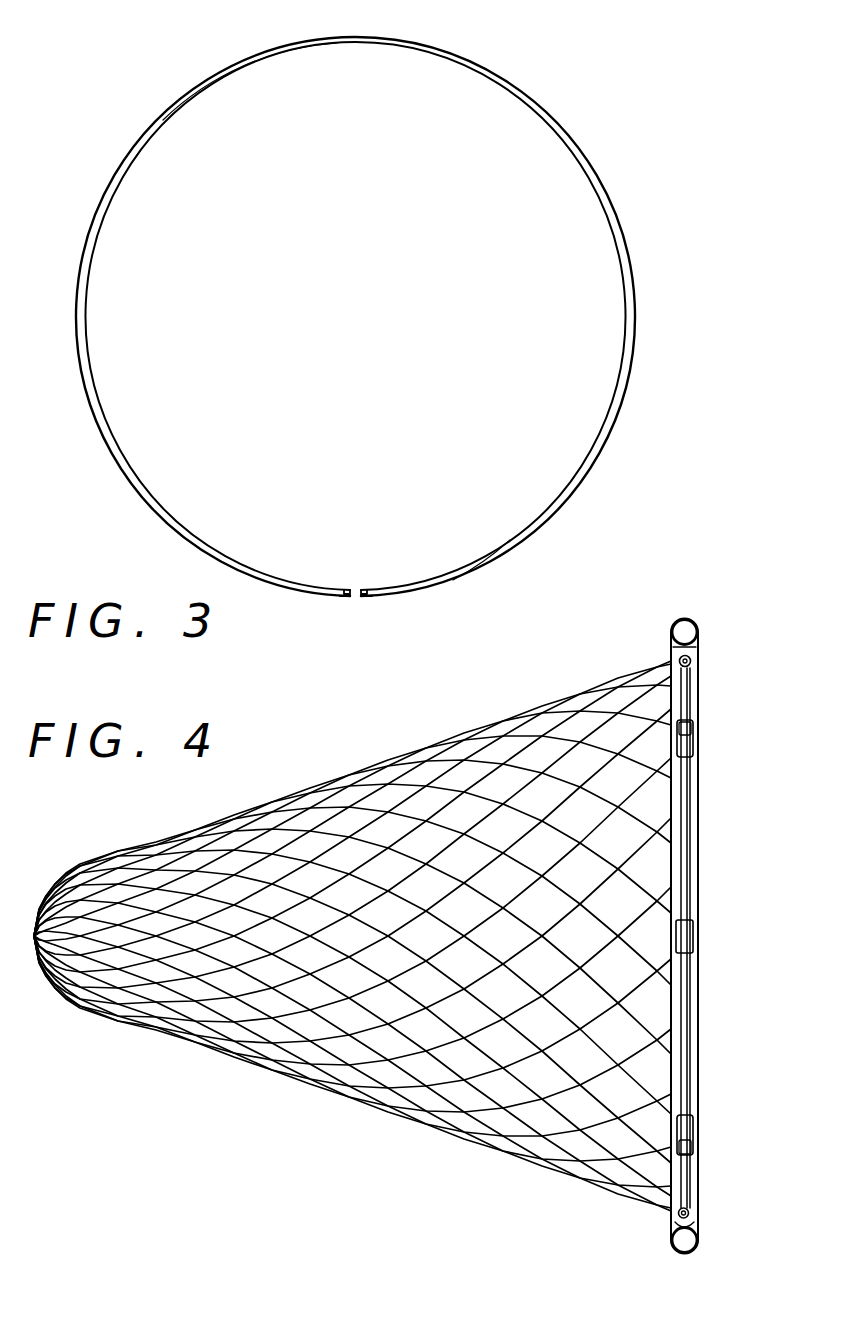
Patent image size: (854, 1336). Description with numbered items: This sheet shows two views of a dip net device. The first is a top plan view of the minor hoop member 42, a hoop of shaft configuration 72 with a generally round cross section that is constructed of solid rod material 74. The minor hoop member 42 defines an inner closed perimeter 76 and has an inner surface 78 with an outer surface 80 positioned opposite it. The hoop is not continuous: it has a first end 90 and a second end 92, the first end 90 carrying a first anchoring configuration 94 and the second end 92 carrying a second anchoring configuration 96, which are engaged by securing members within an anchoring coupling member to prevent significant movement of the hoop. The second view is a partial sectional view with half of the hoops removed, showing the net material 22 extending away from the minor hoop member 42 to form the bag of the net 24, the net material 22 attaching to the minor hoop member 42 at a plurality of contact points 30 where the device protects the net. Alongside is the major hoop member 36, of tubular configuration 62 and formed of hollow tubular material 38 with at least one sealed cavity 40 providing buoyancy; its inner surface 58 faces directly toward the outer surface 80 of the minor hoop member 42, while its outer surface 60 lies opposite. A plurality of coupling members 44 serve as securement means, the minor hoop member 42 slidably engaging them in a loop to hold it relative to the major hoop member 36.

In FIG. 4, the net material 22 is at (352, 936).
In FIG. 4, the bag of the net 24 is at (233, 1050).
In FIG. 4, the contact points 30 is at (685, 939).
In FIG. 4, the major hoop member 36 is at (700, 782).
In FIG. 4, the hollow tubular material 38 is at (681, 620).
In FIG. 4, the sealed cavity 40 is at (695, 625).
In FIG. 3, the minor hoop member 42 is at (341, 316).
In FIG. 4, the minor hoop member 42 is at (692, 822).
In FIG. 4, the coupling members 44 is at (688, 946).
In FIG. 4, the inner surface 58 is at (694, 1195).
In FIG. 4, the outer surface 60 is at (684, 1258).
In FIG. 4, the tubular configuration 62 is at (672, 1242).
In FIG. 4, the shaft configuration 72 is at (690, 662).
In FIG. 4, the solid rod material 74 is at (676, 648).
In FIG. 3, the inner closed perimeter 76 is at (630, 281).
In FIG. 3, the inner surface 78 is at (120, 198).
In FIG. 3, the outer surface 80 is at (121, 165).
In FIG. 3, the first end 90 is at (350, 590).
In FIG. 3, the second end 92 is at (362, 590).
In FIG. 3, the first anchoring configuration 94 is at (343, 605).
In FIG. 3, the second anchoring configuration 96 is at (367, 602).